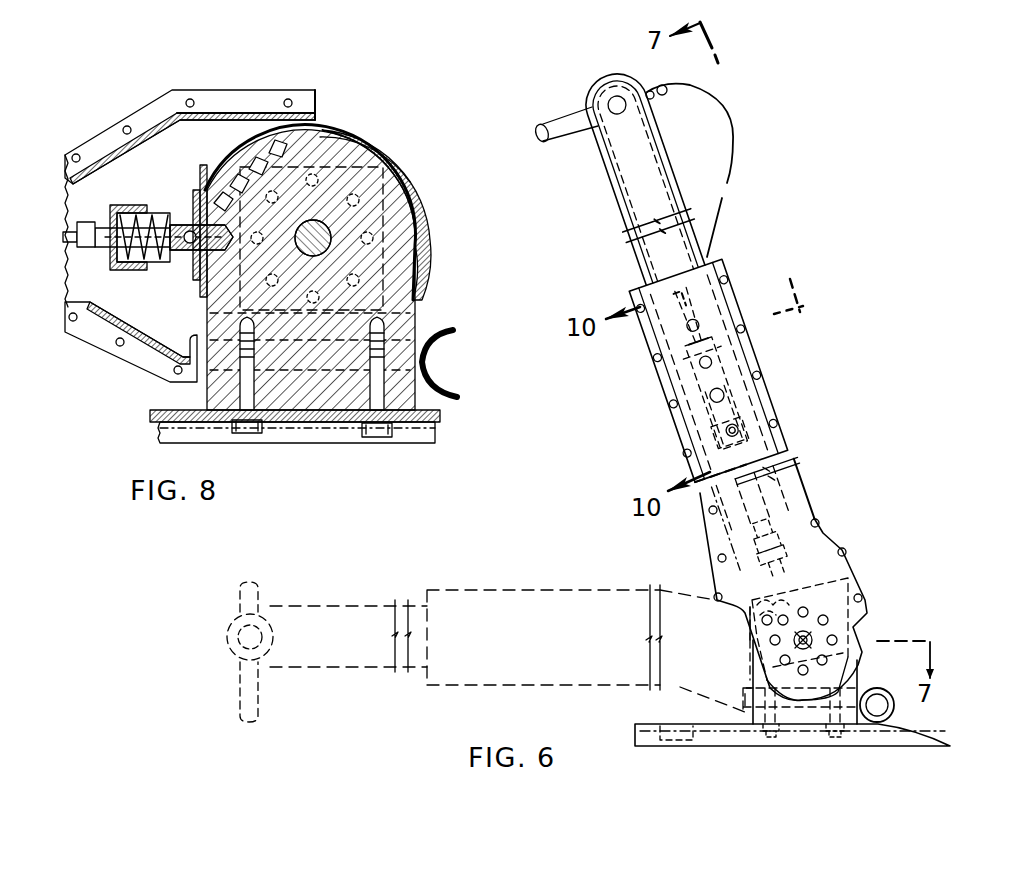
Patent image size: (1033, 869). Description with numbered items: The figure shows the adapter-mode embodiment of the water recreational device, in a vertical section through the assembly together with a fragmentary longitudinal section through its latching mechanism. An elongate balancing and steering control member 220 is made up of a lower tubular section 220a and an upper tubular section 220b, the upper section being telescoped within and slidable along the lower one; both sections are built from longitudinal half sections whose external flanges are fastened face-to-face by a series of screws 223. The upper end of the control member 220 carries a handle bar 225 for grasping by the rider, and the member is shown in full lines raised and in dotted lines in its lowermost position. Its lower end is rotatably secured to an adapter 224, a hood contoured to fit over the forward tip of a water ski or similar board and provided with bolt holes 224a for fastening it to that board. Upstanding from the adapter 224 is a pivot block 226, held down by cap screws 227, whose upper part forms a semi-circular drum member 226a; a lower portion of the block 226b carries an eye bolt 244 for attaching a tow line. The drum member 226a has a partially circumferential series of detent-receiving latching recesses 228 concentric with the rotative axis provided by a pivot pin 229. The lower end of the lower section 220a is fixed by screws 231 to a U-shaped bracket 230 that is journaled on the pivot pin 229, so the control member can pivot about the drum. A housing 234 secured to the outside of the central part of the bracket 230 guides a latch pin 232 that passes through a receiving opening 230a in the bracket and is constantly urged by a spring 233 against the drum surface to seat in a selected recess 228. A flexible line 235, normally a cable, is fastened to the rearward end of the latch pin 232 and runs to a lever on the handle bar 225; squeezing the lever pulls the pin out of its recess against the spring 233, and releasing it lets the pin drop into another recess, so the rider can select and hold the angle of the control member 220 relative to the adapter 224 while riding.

In FIG. 8, the elongate balancing and steering control member 220 is at (128, 375).
In FIG. 6, the elongate balancing and steering control member 220 is at (443, 585).
In FIG. 8, the lower tubular section 220a is at (150, 130).
In FIG. 6, the lower tubular section 220a is at (800, 482).
In FIG. 6, the upper tubular section 220b is at (648, 150).
In FIG. 6, the screws 223 is at (758, 366).
In FIG. 8, the adapter 224 is at (440, 430).
In FIG. 6, the adapter 224 is at (920, 740).
In FIG. 6, the bolt holes 224a is at (690, 742).
In FIG. 6, the handle bar 225 is at (566, 120).
In FIG. 8, the pivot block 226 is at (412, 330).
In FIG. 8, the semi-circular drum member 226a is at (385, 175).
In FIG. 6, the semi-circular drum member 226a is at (868, 603).
In FIG. 6, the mounting block lower portion 226b is at (845, 692).
In FIG. 8, the cap screws 227 is at (250, 428).
In FIG. 6, the cap screws 227 is at (840, 745).
In FIG. 8, the latching recesses 228 is at (253, 167).
In FIG. 6, the latching recesses 228 is at (750, 627).
In FIG. 8, the pivot pin 229 is at (320, 240).
In FIG. 6, the pivot pin 229 is at (796, 642).
In FIG. 8, the U-shaped bracket 230 is at (200, 303).
In FIG. 6, the U-shaped bracket 230 is at (815, 578).
In FIG. 8, the receiving opening 230a is at (195, 275).
In FIG. 8, the screws 231 is at (350, 197).
In FIG. 6, the screws 231 is at (827, 617).
In FIG. 8, the latch pin 232 is at (183, 222).
In FIG. 8, the spring 233 is at (158, 207).
In FIG. 8, the housing 234 is at (125, 268).
In FIG. 6, the housing 234 is at (757, 552).
In FIG. 8, the flexible line 235 is at (68, 232).
In FIG. 6, the flexible line 235 is at (730, 196).
In FIG. 8, the eye bolt 244 is at (448, 382).
In FIG. 6, the eye bolt 244 is at (877, 722).